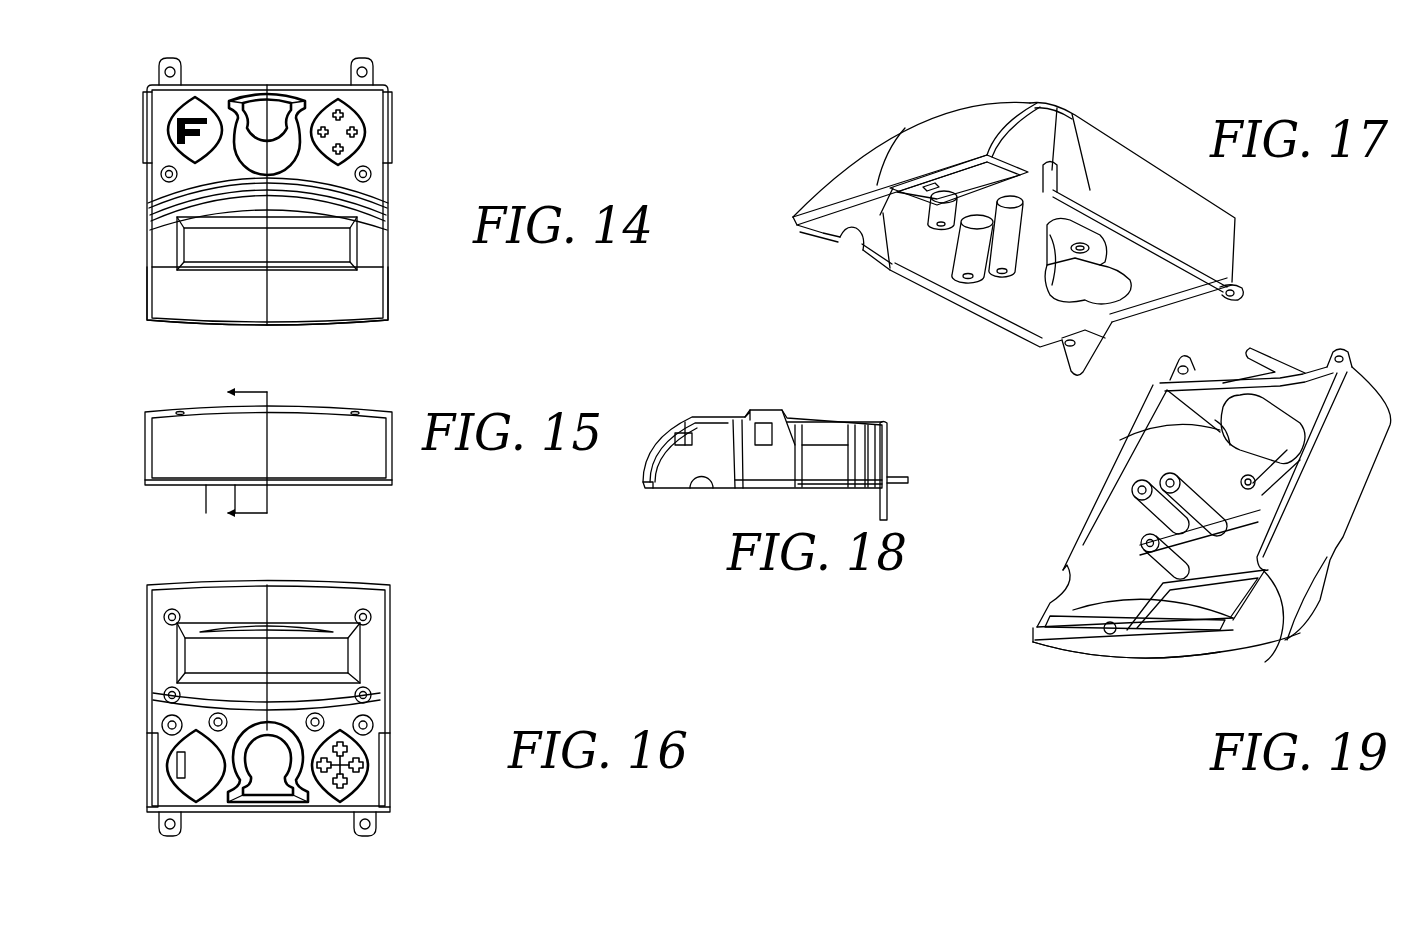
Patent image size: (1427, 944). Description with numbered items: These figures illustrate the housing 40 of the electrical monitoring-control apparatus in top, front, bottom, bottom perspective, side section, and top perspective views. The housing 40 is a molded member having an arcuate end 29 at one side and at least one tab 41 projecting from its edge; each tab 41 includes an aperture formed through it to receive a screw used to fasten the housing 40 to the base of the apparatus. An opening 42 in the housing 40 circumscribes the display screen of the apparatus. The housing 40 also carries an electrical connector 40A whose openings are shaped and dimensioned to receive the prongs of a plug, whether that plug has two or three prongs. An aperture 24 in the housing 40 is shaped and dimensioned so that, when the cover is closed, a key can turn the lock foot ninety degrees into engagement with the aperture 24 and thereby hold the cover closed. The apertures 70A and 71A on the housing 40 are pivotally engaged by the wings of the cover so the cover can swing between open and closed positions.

In FIG. 14, the aperture 24 is at (289, 92).
In FIG. 14, the arcuate end 29 is at (255, 307).
In FIG. 15, the arcuate end 29 is at (257, 437).
In FIG. 17, the arcuate end 29 is at (848, 178).
In FIG. 19, the arcuate end 29 is at (1190, 655).
In FIG. 14, the housing 40 is at (405, 203).
In FIG. 16, the housing 40 is at (408, 620).
In FIG. 18, the housing 40 is at (692, 410).
In FIG. 17, the housing 40 is at (1090, 100).
In FIG. 19, the housing 40 is at (1095, 665).
In FIG. 17, the electrical connector 40A is at (1063, 277).
In FIG. 19, the electrical connector 40A is at (1225, 438).
In FIG. 14, the tab 41 is at (373, 68).
In FIG. 16, the tab 41 is at (376, 826).
In FIG. 17, the tab 41 is at (1240, 288).
In FIG. 19, the tab 41 is at (1195, 365).
In FIG. 14, the opening 42 is at (243, 265).
In FIG. 16, the opening 42 is at (350, 663).
In FIG. 17, the opening 42 is at (959, 180).
In FIG. 19, the opening 42 is at (1052, 617).
In FIG. 19, the aperture 70A is at (1280, 612).
In FIG. 19, the aperture 71A is at (1062, 580).